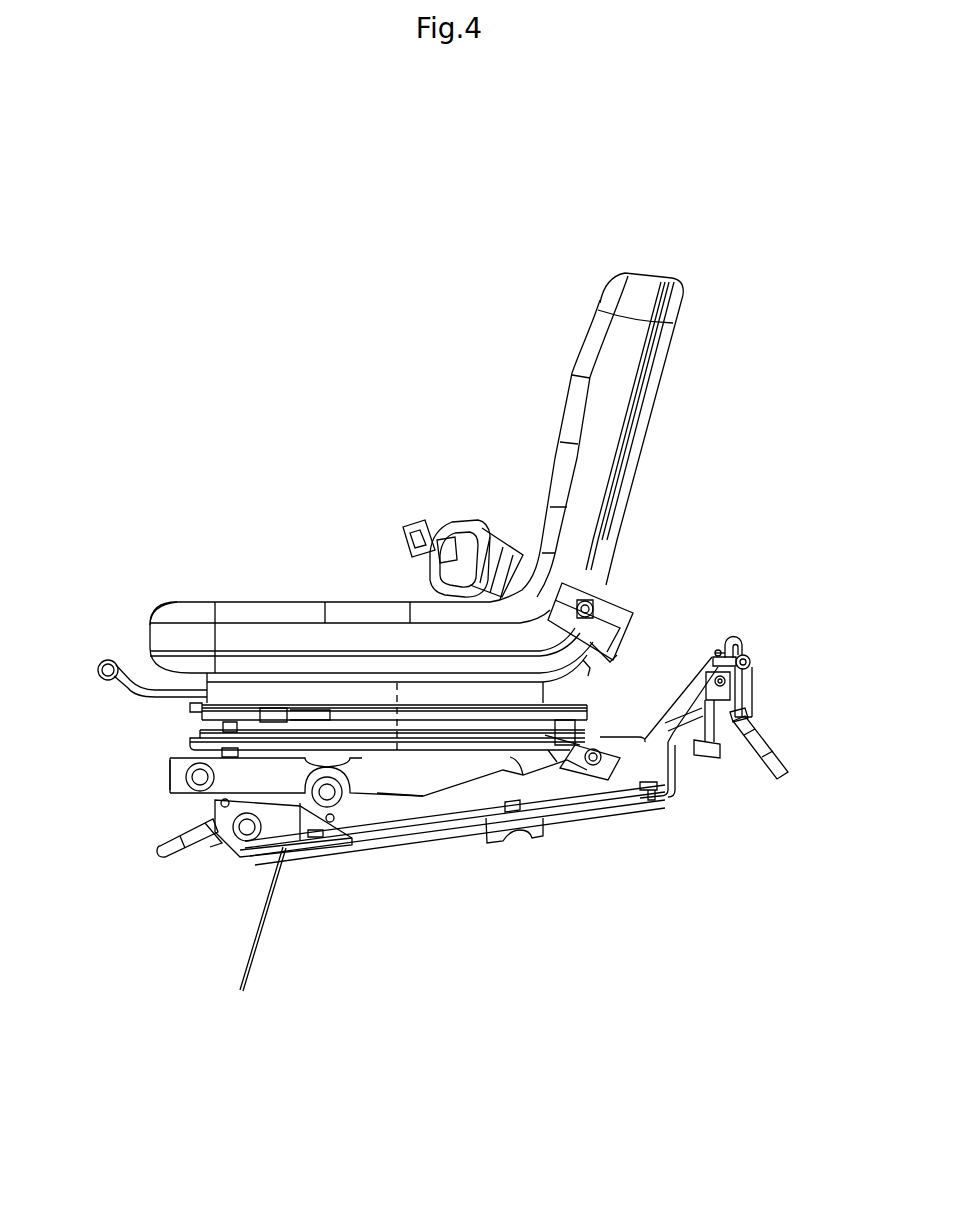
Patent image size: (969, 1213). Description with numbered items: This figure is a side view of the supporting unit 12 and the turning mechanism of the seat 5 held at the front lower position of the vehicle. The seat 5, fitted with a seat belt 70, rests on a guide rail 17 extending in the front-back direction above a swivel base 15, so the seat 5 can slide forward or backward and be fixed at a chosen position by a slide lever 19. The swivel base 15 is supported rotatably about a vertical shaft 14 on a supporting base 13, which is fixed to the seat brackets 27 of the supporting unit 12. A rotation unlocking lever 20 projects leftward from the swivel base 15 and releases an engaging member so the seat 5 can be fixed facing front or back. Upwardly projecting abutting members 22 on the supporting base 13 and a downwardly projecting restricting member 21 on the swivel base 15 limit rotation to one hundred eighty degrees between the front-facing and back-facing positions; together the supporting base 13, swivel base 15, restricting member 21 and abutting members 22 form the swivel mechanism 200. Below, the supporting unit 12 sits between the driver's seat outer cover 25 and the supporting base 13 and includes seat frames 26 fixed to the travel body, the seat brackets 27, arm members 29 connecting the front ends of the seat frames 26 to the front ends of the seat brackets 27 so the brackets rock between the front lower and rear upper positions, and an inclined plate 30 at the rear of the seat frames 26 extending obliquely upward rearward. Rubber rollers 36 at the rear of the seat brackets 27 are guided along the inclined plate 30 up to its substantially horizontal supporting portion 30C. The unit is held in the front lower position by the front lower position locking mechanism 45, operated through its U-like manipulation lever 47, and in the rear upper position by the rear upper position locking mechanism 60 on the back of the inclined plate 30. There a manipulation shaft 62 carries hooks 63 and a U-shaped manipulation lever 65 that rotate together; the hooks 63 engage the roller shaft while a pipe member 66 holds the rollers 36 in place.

The seat 5 is at (650, 282).
The seat belt 70 is at (468, 521).
The inclined plate 30 is at (713, 660).
The vertical shaft 14 is at (392, 755).
The guide rail 17 is at (532, 693).
The slide lever 19 is at (106, 660).
The swivel base 15 is at (588, 711).
The supporting base 13 is at (593, 734).
The rotation unlocking lever 20 is at (260, 716).
The restricting member 21 is at (413, 775).
The swivel mechanism 200 is at (166, 747).
The supporting unit 12 is at (156, 804).
The abutting member 22 is at (412, 785).
The front lower position locking mechanism 45 is at (222, 860).
The seat bracket 27 is at (370, 780).
The seat frame 26 is at (487, 800).
The arm member 29 is at (300, 803).
The roller 36 is at (580, 766).
The manipulation lever 47 is at (168, 863).
The driver's seat outer cover 25 is at (243, 970).
The rear upper position locking mechanism 60 is at (762, 676).
The hook 63 is at (740, 637).
The supporting portion 30C is at (725, 650).
The manipulation shaft 62 is at (726, 681).
The pipe member 66 is at (712, 650).
The manipulation lever 65 is at (781, 780).